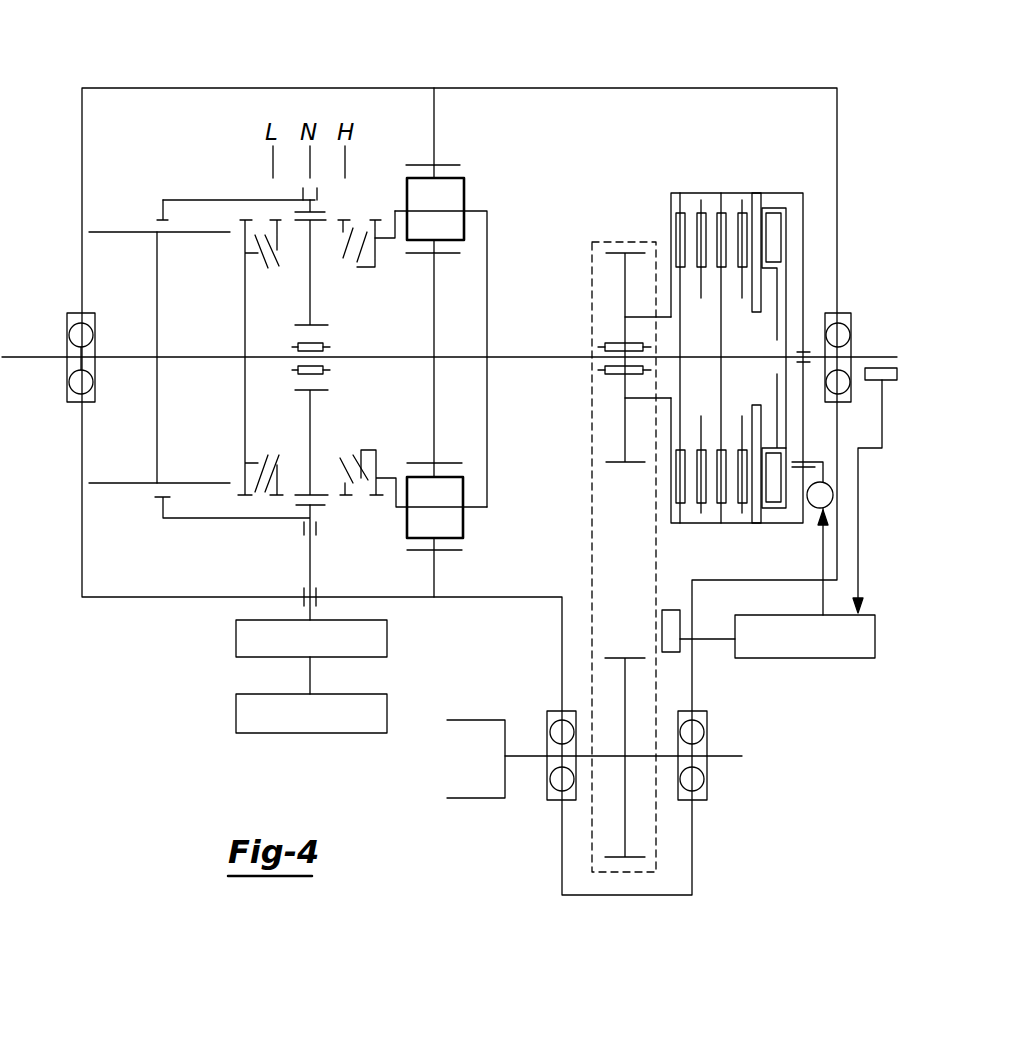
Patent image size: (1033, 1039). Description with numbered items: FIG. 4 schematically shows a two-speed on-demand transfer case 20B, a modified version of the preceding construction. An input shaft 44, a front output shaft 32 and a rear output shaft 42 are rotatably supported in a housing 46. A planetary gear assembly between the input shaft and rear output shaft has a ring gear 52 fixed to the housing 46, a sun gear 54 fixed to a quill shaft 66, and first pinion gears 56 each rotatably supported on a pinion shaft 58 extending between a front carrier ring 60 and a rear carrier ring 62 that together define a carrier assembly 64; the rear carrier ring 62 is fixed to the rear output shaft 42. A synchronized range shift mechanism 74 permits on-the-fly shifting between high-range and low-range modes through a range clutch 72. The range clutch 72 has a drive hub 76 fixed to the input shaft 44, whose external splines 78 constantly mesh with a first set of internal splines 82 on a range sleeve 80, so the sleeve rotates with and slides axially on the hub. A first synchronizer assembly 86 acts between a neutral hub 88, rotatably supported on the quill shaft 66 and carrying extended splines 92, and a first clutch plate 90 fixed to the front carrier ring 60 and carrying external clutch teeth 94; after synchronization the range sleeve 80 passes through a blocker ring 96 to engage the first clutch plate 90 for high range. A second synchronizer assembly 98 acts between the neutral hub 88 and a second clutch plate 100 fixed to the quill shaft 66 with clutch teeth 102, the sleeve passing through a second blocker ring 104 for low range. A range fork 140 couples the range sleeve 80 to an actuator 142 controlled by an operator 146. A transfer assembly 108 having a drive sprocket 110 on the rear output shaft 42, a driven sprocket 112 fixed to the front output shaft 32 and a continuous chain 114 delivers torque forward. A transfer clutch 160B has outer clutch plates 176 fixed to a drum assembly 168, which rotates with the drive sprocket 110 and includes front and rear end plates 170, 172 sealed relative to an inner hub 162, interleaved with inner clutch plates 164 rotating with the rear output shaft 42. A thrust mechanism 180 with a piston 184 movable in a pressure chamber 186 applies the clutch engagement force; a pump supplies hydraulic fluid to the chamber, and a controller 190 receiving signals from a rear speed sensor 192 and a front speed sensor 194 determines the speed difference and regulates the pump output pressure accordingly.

The transfer case 20B is at (747, 71).
The front output shaft 32 is at (530, 755).
The rear output shaft 42 is at (812, 338).
The input shaft 44 is at (62, 352).
The housing 46 is at (710, 88).
The ring gear 52 is at (440, 160).
The sun gear 54 is at (434, 318).
The first pinion gears 56 is at (450, 192).
The pinion shaft 58 is at (466, 207).
The front carrier ring 60 is at (394, 212).
The rear carrier ring 62 is at (490, 224).
The carrier assembly 64 is at (487, 210).
The quill shaft 66 is at (368, 355).
The range clutch 72 is at (288, 537).
The synchronized range shift mechanism 74 is at (197, 637).
The drive hub 76 is at (210, 310).
The external splines 78 is at (128, 232).
The range sleeve 80 is at (240, 200).
The first set of internal splines 82 is at (155, 222).
The first synchronizer assembly 86 is at (379, 445).
The neutral hub 88 is at (318, 265).
The first clutch plate 90 is at (357, 266).
The extended splines 92 is at (322, 216).
The external clutch teeth 94 is at (372, 500).
The blocker ring 96 is at (343, 480).
The second synchronizer assembly 98 is at (270, 449).
The second clutch plate 100 is at (275, 342).
The external clutch teeth 102 is at (247, 518).
The second blocker ring 104 is at (280, 240).
The transfer assembly 108 is at (618, 537).
The drive sprocket 110 is at (626, 277).
The driven sprocket 112 is at (625, 683).
The continuous chain 114 is at (656, 578).
The range fork 140 is at (312, 558).
The actuator 142 is at (380, 657).
The operator 146 is at (385, 733).
The transfer clutch 160B is at (757, 182).
The inner hub 162 is at (812, 510).
The inner clutch plates 164 is at (680, 432).
The drum assembly 168 is at (720, 191).
The front end plate 170 is at (670, 205).
The rear end plate 172 is at (803, 267).
The outer clutch plates 176 is at (680, 200).
The thrust mechanism 180 is at (787, 228).
The piston 184 is at (798, 247).
The pressure chamber 186 is at (800, 207).
The controller 190 is at (866, 660).
The rear speed sensor 192 is at (893, 365).
The front speed sensor 194 is at (672, 652).